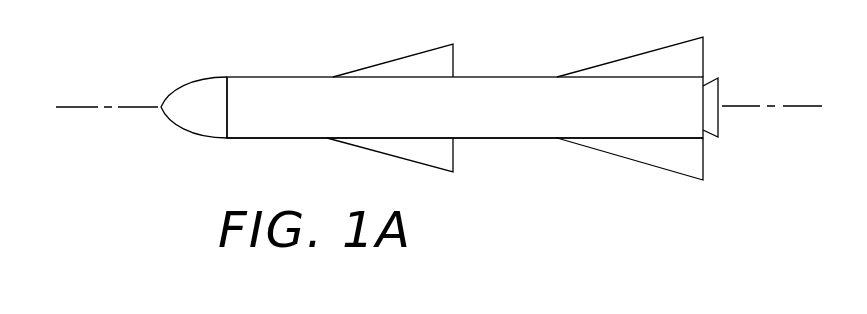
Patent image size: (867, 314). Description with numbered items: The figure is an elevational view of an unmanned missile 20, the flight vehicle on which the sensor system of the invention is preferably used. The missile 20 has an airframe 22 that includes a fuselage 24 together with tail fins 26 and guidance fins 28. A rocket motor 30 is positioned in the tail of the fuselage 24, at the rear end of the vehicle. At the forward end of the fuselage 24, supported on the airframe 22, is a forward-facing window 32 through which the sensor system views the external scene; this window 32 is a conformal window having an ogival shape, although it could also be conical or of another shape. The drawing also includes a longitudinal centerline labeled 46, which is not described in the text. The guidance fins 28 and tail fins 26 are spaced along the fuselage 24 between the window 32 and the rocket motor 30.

The unmanned missile 20 is at (183, 70).
The airframe 22 is at (283, 76).
The fuselage 24 is at (316, 140).
The tail fins 26 is at (660, 48).
The guidance fins 28 is at (414, 59).
The rocket motor 30 is at (708, 132).
The forward-facing window 32 is at (161, 105).
The missile longitudinal axis 46 is at (78, 107).